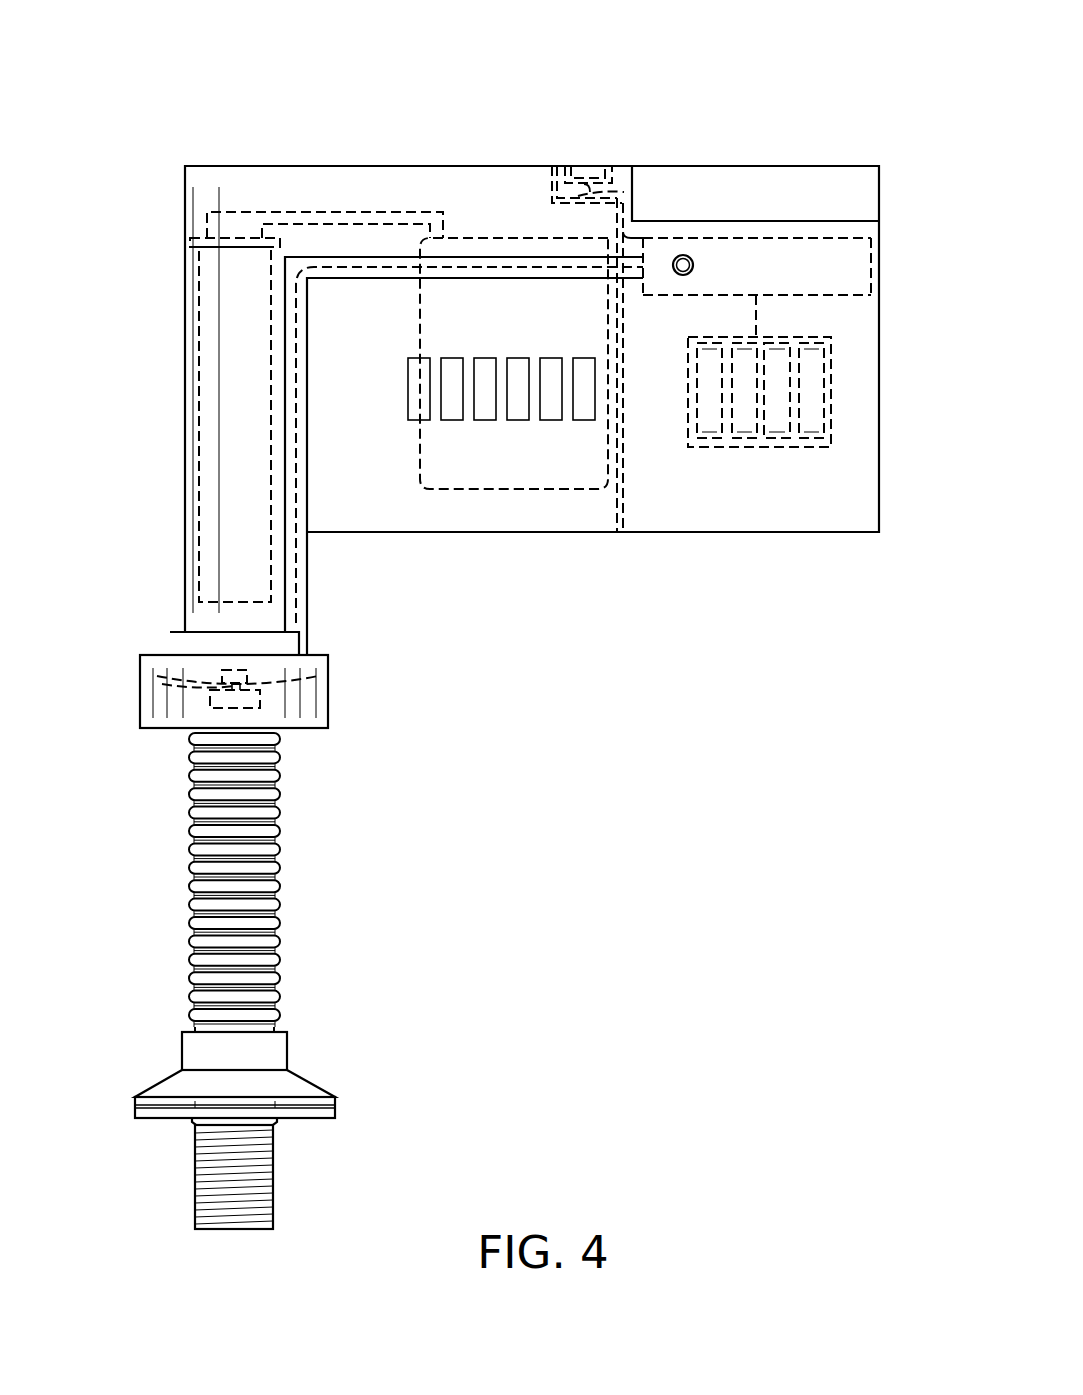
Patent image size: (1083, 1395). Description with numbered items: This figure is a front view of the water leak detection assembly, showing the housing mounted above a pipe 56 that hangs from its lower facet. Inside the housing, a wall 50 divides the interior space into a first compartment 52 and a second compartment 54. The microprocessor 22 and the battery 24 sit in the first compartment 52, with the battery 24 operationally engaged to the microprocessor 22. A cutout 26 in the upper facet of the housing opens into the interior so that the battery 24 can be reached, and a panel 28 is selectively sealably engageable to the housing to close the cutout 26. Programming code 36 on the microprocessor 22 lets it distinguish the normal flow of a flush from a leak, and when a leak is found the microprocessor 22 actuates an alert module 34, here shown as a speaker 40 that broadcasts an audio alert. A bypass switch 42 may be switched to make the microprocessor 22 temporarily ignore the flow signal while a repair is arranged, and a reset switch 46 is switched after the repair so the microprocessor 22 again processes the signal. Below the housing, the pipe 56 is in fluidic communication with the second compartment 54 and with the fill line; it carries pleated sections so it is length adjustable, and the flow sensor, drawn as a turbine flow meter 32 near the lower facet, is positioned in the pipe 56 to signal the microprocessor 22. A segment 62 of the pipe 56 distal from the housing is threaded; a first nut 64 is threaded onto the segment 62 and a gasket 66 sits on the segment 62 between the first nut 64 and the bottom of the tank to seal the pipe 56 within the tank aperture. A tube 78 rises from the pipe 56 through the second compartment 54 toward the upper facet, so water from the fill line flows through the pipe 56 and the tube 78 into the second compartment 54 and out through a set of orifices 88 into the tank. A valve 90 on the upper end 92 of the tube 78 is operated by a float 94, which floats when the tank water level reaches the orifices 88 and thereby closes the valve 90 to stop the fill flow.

The microprocessor 22 is at (793, 263).
The battery 24 is at (815, 378).
The cutout 26 is at (775, 197).
The panel 28 is at (733, 197).
The turbine flow meter 32 is at (307, 678).
The alert module 34 is at (617, 173).
The speaker 40 is at (588, 174).
The programming code 36 is at (847, 275).
The bypass switch 42 is at (575, 175).
The reset switch 46 is at (683, 253).
The wall 50 is at (623, 463).
The first compartment 52 is at (770, 472).
The second compartment 54 is at (438, 497).
The pipe 56 is at (192, 838).
The segment 62 is at (210, 1138).
The first nut 64 is at (268, 1053).
The gasket 66 is at (337, 1113).
The tube 78 is at (238, 440).
The set of orifices 88 is at (519, 383).
The valve 90 is at (233, 227).
The upper end 92 is at (242, 250).
The float 94 is at (574, 472).